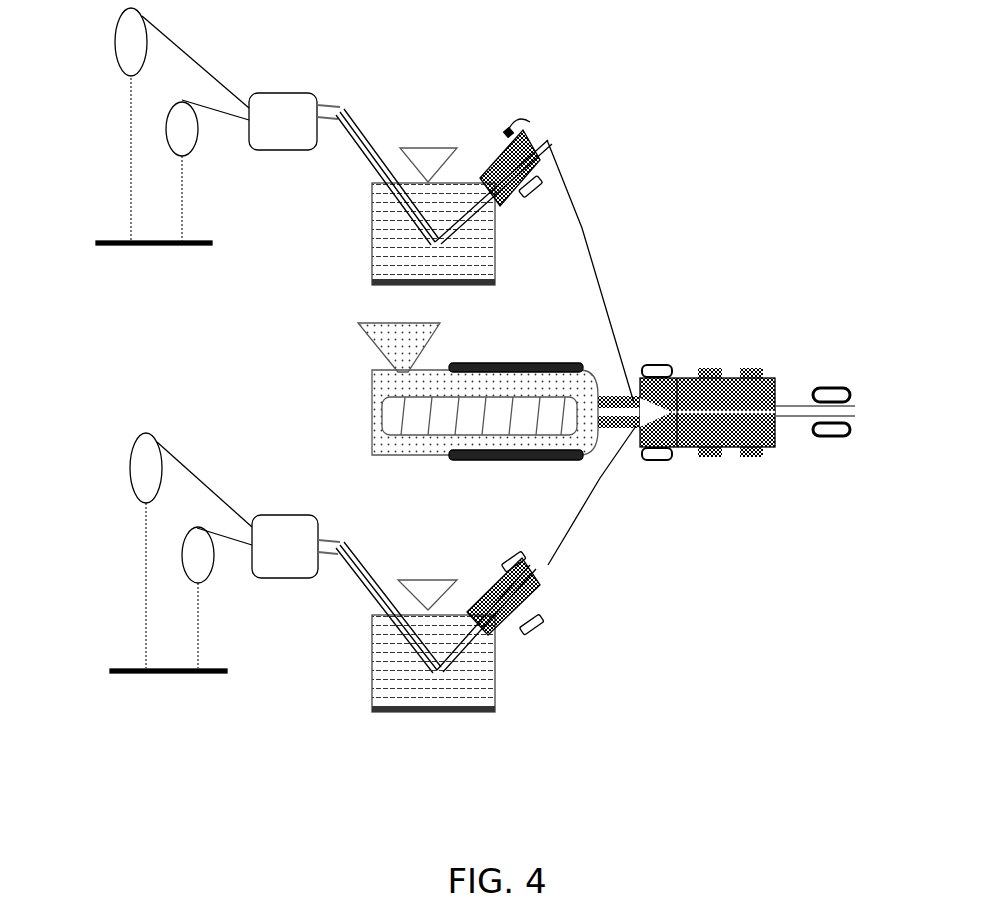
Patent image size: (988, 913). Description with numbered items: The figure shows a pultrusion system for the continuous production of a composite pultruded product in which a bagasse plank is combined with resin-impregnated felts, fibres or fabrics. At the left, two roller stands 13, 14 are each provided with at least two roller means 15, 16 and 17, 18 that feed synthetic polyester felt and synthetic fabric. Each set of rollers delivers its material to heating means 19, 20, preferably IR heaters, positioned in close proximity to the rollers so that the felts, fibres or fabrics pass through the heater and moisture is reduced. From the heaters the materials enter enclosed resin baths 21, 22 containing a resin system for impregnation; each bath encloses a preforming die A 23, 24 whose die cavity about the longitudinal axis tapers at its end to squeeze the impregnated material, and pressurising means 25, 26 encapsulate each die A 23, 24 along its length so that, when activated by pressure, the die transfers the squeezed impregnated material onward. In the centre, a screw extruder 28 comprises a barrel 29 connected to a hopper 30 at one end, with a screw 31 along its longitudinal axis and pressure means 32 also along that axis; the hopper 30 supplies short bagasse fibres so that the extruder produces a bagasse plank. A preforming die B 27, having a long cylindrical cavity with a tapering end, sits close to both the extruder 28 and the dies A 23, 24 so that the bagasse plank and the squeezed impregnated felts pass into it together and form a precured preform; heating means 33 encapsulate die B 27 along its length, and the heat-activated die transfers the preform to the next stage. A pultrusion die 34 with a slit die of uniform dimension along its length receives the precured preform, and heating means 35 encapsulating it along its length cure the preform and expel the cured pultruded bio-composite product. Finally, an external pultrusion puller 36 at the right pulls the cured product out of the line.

The roller stand 13 is at (160, 246).
The roller stand 14 is at (177, 673).
The roller means 15 is at (115, 43).
The roller means 16 is at (197, 147).
The roller means 17 is at (130, 463).
The roller means 18 is at (212, 573).
The heating means 19 is at (283, 121).
The heating means 20 is at (285, 546).
The enclosed resin bath 21 is at (372, 233).
The enclosed resin bath 22 is at (372, 670).
The preforming die A 23 is at (503, 140).
The preforming die A 24 is at (520, 633).
The pressurising means 25 is at (523, 120).
The pressurising means 26 is at (540, 628).
The preforming die B 27 is at (648, 427).
The screw extruder 28 is at (370, 392).
The barrel 29 is at (418, 452).
The hopper 30 is at (433, 333).
The screw 31 is at (518, 382).
The pressure means 32 is at (500, 460).
The heating means 33 is at (653, 367).
The pultrusion die 34 is at (733, 410).
The heating means 35 is at (757, 373).
The external pultrusion puller 36 is at (843, 388).